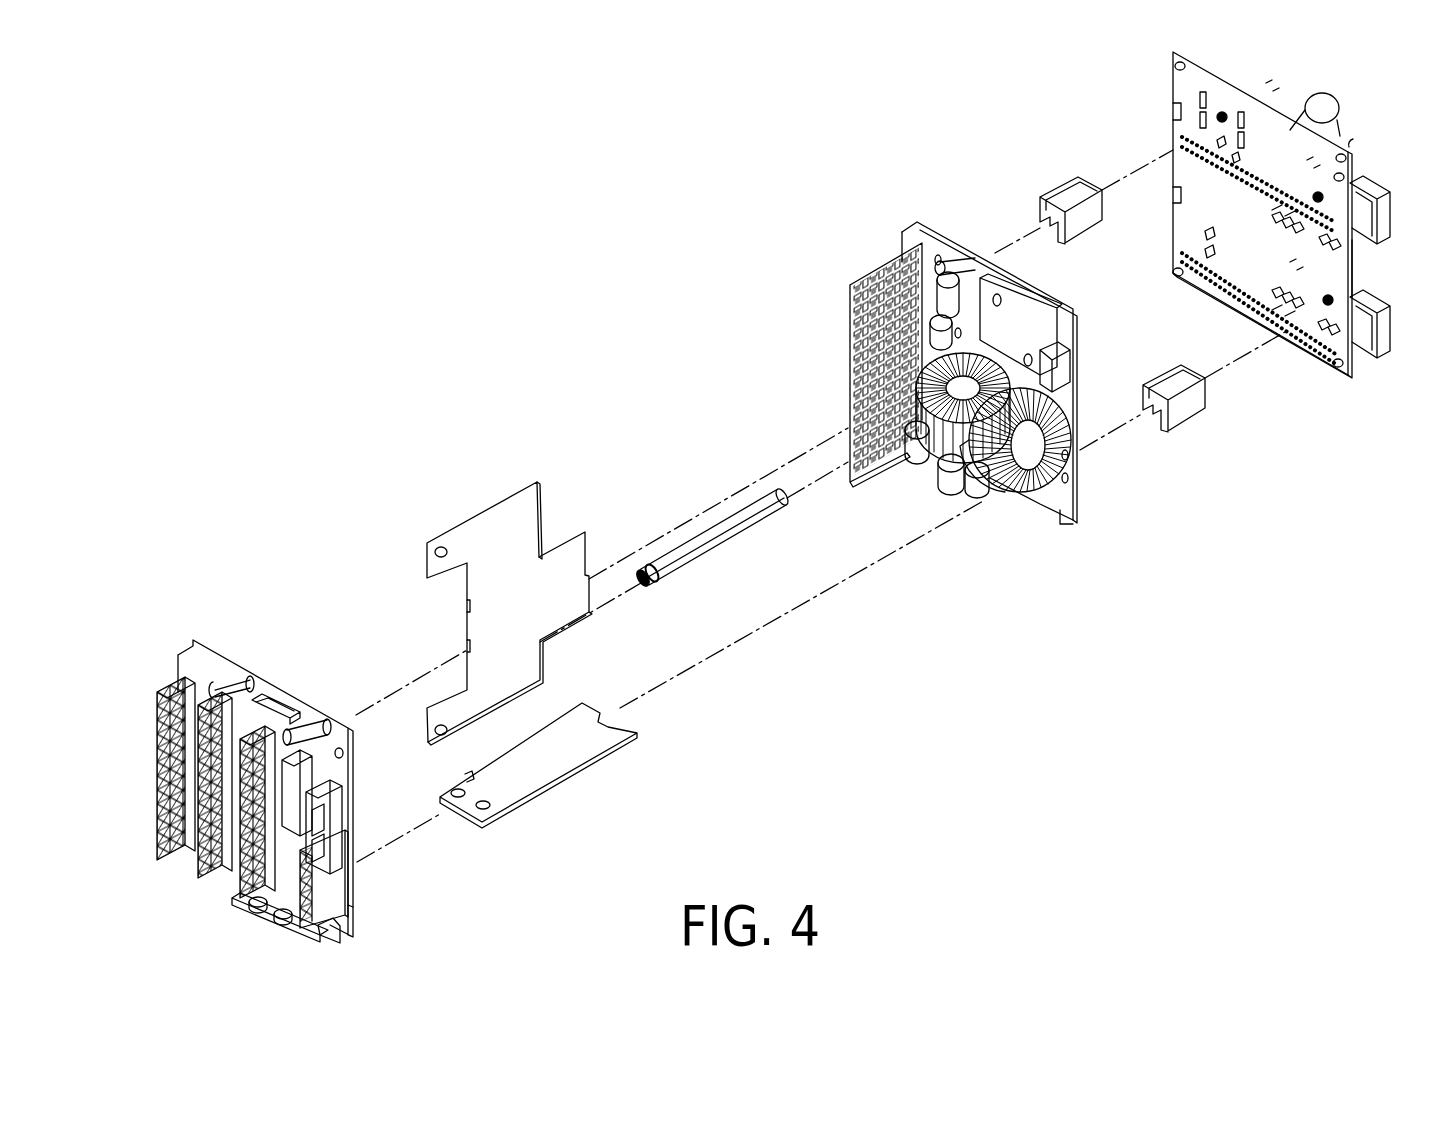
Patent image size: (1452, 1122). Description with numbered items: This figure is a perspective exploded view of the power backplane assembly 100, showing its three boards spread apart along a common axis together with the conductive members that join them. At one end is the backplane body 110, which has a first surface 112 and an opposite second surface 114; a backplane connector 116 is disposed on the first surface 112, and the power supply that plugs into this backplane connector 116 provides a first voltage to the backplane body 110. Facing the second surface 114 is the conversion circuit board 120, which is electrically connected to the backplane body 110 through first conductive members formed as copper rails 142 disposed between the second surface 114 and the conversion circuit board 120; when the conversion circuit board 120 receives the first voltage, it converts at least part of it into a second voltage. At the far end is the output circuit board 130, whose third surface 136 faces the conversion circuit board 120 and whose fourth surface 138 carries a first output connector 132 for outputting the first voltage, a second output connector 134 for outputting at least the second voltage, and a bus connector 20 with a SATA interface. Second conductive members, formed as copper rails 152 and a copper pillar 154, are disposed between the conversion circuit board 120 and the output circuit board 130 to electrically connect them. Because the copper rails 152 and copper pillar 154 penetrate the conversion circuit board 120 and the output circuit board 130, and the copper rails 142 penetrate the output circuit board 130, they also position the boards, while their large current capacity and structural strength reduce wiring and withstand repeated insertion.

The power backplane assembly 100 is at (372, 259).
The backplane body 110 is at (1233, 103).
The first surface 112 is at (1355, 282).
The second surface 114 is at (1192, 83).
The backplane connector 116 is at (1383, 212).
The conversion circuit board 120 is at (952, 252).
The output circuit board 130 is at (207, 650).
The first output connector 132 is at (160, 808).
The second output connector 134 is at (227, 883).
The third surface 136 is at (353, 921).
The fourth surface 138 is at (330, 925).
The copper rails 142 is at (1065, 183).
The copper rails 152 is at (500, 527).
The copper pillar 154 is at (723, 535).
The bus connector 20 is at (273, 697).